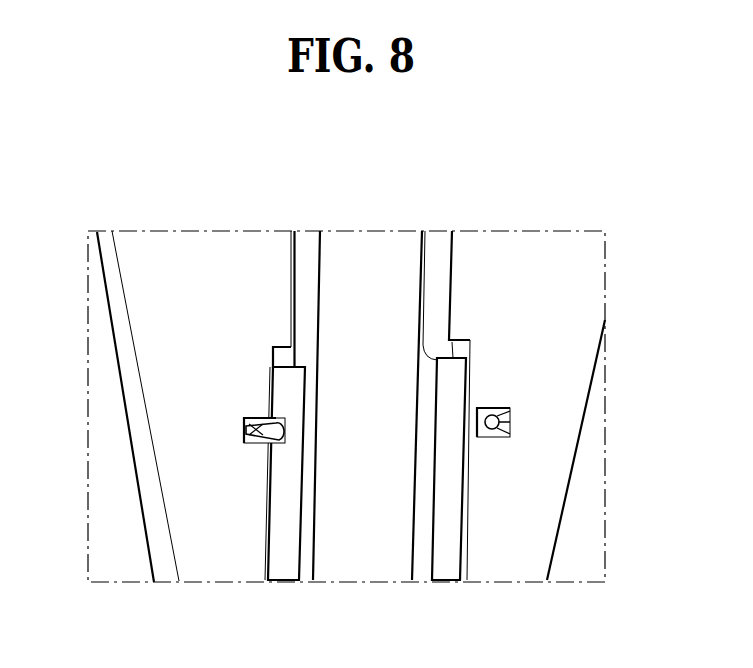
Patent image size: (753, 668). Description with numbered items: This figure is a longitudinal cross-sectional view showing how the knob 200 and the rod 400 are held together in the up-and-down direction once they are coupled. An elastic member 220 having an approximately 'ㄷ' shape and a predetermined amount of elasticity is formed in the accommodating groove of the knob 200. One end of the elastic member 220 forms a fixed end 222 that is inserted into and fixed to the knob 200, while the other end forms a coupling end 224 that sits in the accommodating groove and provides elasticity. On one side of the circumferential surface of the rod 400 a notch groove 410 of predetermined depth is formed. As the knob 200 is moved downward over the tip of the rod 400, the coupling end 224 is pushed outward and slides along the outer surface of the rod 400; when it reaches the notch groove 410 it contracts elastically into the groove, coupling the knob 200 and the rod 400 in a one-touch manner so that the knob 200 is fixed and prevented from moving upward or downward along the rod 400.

The knob 200 is at (593, 268).
The elastic member 220 is at (506, 414).
The fixed end 222 is at (497, 424).
The coupling end 224 is at (246, 430).
The rod 400 is at (447, 572).
The notch groove 410 is at (292, 427).